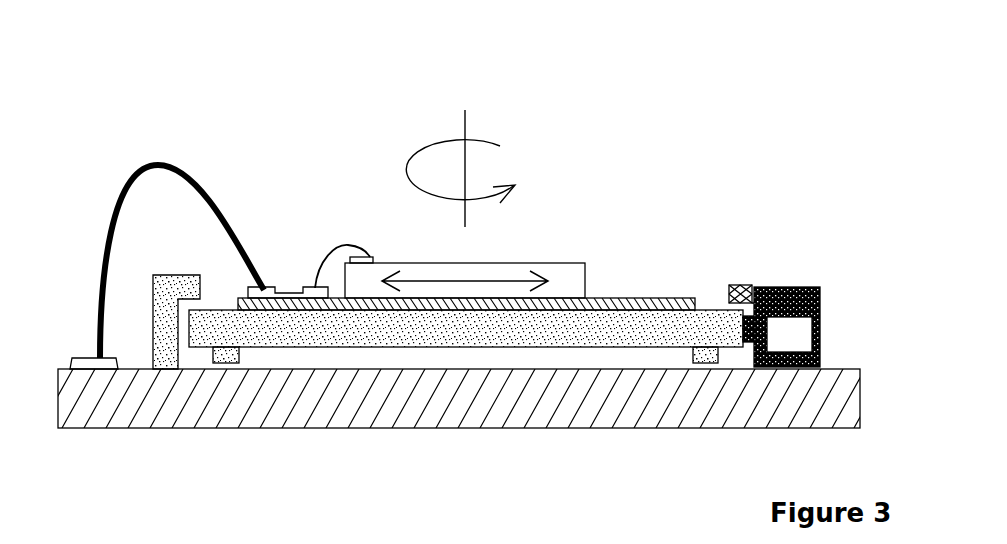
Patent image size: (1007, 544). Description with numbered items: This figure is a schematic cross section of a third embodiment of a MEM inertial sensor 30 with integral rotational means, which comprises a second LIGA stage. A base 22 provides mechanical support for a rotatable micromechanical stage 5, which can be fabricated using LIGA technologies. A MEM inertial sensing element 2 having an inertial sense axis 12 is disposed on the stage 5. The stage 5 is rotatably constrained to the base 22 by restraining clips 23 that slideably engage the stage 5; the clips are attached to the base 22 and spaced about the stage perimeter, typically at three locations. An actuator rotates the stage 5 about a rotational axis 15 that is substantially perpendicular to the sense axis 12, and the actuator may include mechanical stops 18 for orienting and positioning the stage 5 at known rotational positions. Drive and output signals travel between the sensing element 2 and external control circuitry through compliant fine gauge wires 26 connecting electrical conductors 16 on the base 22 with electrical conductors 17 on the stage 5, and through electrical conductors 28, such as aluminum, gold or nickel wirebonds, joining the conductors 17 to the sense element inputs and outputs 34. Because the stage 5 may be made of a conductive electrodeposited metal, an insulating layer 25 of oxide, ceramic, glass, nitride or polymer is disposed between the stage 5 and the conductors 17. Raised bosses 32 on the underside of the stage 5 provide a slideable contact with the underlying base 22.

The MEM inertial sensing element 2 is at (563, 273).
The rotatable micromechanical stage 5 is at (317, 328).
The inertial sense axis 12 is at (498, 280).
The rotational axis 15 is at (465, 132).
The electrical conductors on the base 16 is at (90, 365).
The electrical conductors on the stage 17 is at (290, 295).
The mechanical stops 18 is at (755, 287).
The base 22 is at (463, 398).
The restraining clips 23 is at (173, 348).
The insulating layer 25 is at (657, 303).
The compliant fine gauge wires 26 is at (127, 178).
The electrical conductors 28 is at (340, 247).
The MEM inertial sensor 30 is at (733, 114).
The raised bosses 32 is at (233, 360).
The sense element inputs and outputs 34 is at (372, 262).